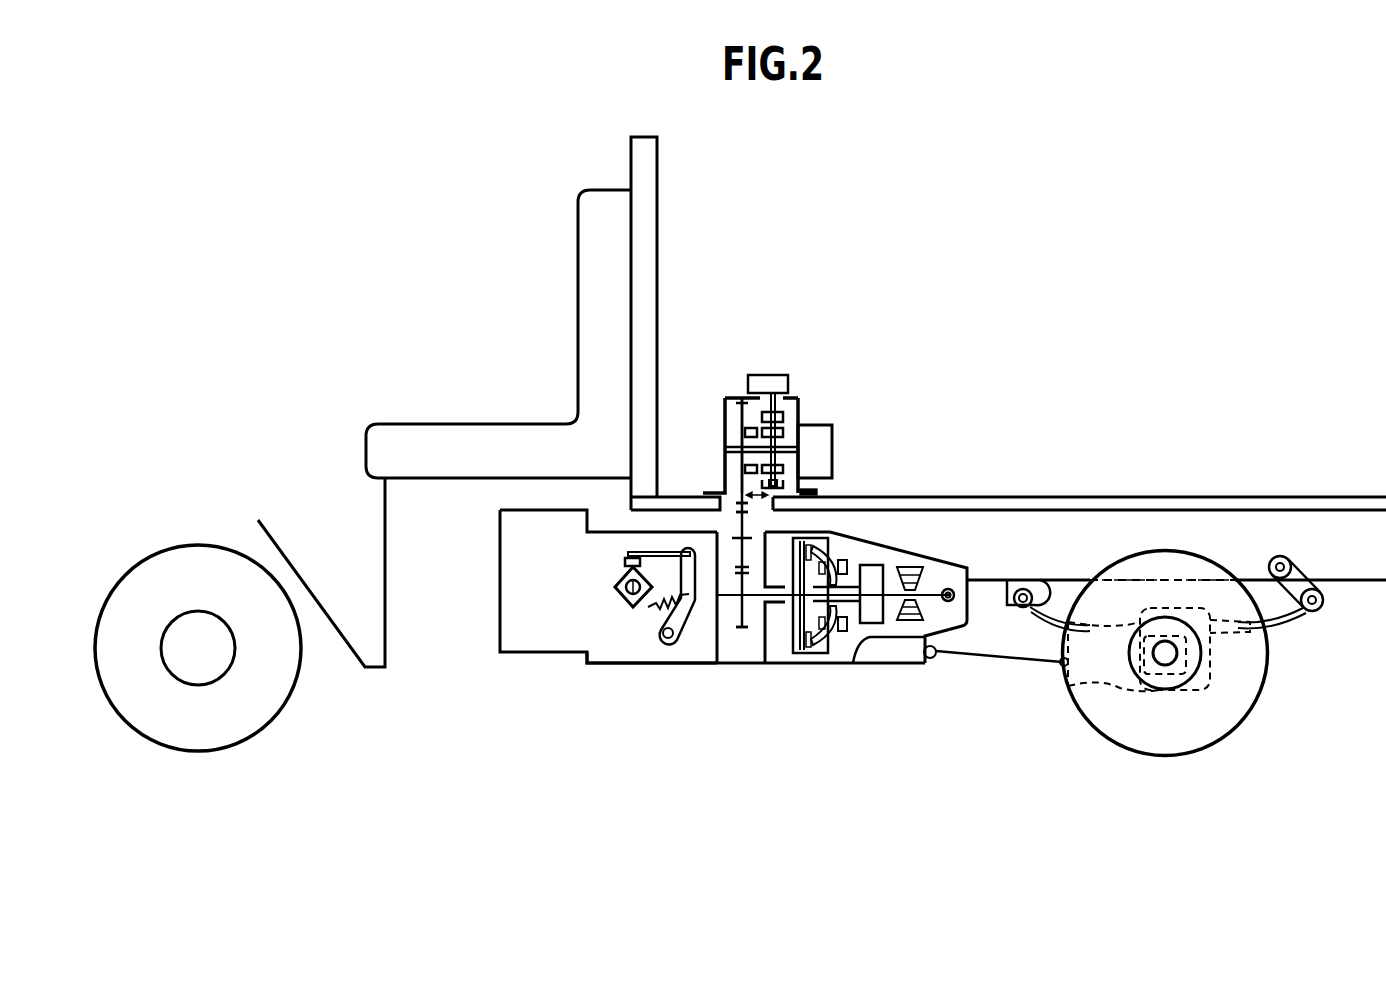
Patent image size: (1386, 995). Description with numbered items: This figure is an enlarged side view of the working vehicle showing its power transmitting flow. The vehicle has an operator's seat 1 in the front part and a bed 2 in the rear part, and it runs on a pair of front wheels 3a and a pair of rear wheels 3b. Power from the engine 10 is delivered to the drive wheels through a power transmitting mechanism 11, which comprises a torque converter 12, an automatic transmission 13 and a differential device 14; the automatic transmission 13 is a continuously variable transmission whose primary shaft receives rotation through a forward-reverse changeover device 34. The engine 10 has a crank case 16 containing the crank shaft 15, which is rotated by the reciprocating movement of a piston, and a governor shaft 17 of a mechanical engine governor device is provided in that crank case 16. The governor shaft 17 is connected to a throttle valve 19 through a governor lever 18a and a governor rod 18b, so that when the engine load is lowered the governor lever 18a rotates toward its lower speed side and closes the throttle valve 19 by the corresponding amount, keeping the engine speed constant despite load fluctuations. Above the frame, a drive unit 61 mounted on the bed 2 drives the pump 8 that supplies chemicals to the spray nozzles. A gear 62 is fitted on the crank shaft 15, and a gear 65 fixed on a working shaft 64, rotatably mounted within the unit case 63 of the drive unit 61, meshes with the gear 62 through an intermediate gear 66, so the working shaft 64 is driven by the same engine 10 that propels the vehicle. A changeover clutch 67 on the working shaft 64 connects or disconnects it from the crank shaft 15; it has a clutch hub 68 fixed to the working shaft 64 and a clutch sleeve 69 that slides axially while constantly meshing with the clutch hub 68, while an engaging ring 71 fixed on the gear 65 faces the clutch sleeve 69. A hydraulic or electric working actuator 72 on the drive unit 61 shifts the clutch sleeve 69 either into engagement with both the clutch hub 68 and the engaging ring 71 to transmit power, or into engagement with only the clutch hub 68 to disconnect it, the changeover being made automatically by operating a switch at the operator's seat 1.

The operator's seat 1 is at (476, 432).
The bed 2 is at (1173, 496).
The front wheels 3a is at (270, 690).
The rear wheels 3b is at (1162, 757).
The pump 8 is at (825, 455).
The engine 10 is at (520, 640).
The power transmitting mechanism 11 is at (837, 706).
The torque converter 12 is at (813, 653).
The automatic transmission 13 is at (910, 567).
The differential device 14 is at (1080, 690).
The crank shaft 15 is at (730, 597).
The crank case 16 is at (613, 653).
The governor shaft 17 is at (663, 642).
The governor lever 18a is at (687, 615).
The governor rod 18b is at (647, 553).
The throttle valve 19 is at (622, 597).
The forward-reverse changeover device 34 is at (875, 635).
The drive unit 61 is at (720, 412).
The gear 62 is at (742, 630).
The unit case 63 is at (795, 402).
The working shaft 64 is at (790, 447).
The gear 65 is at (742, 400).
The intermediate gear 66 is at (745, 520).
The changeover clutch 67 is at (785, 408).
The clutch hub 68 is at (790, 470).
The clutch sleeve 69 is at (790, 414).
The engaging ring 71 is at (748, 470).
The working actuator 72 is at (775, 383).